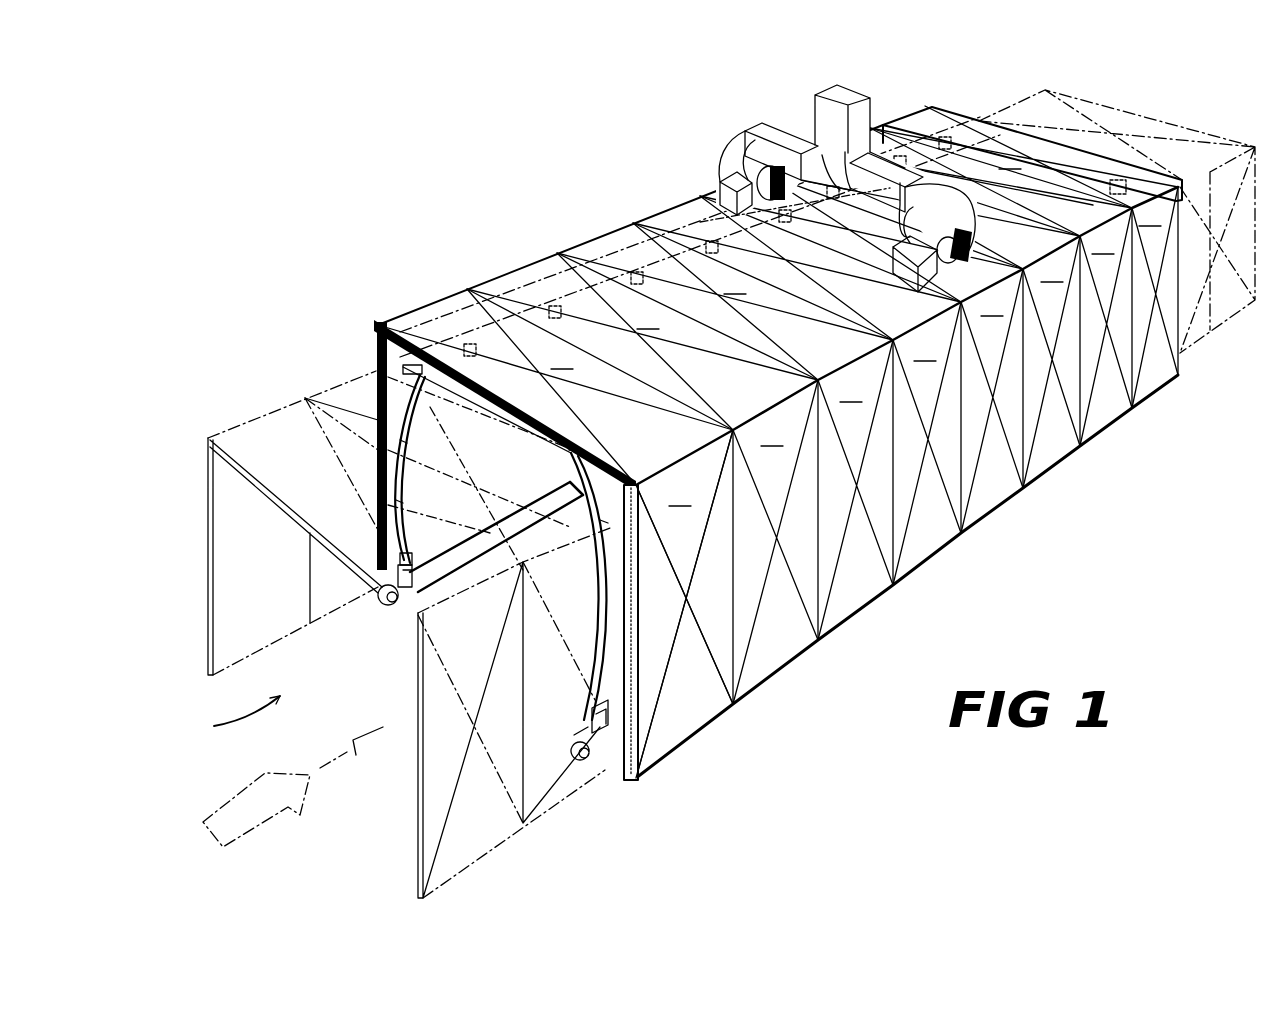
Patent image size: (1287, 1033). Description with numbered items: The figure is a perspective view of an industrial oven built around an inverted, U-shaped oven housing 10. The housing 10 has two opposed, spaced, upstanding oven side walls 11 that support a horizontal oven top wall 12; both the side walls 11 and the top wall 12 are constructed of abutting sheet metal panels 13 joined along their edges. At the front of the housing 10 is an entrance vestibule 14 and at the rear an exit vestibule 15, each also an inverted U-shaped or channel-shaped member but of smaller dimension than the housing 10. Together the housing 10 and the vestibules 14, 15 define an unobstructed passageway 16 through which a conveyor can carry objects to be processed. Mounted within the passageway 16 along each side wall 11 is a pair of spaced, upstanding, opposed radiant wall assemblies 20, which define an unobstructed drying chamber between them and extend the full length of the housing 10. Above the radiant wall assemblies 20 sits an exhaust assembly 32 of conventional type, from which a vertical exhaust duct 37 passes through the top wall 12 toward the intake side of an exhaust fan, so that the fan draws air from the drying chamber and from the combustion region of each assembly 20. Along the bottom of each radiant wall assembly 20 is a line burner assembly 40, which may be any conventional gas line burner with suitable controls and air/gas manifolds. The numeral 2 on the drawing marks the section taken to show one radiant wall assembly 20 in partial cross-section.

The oven housing 10 is at (375, 320).
The oven side walls 11 is at (376, 384).
The oven top wall 12 is at (468, 297).
The panels 13 is at (856, 463).
The entrance vestibule 14 is at (230, 430).
The exit vestibule 15 is at (1183, 118).
The passageway 16 is at (233, 713).
The radiant wall assemblies 20 is at (418, 432).
The exhaust assembly 32 is at (753, 122).
The vertical exhaust duct 37 is at (722, 196).
The line burner assembly 40 is at (396, 600).
The section line 2 is at (293, 787).